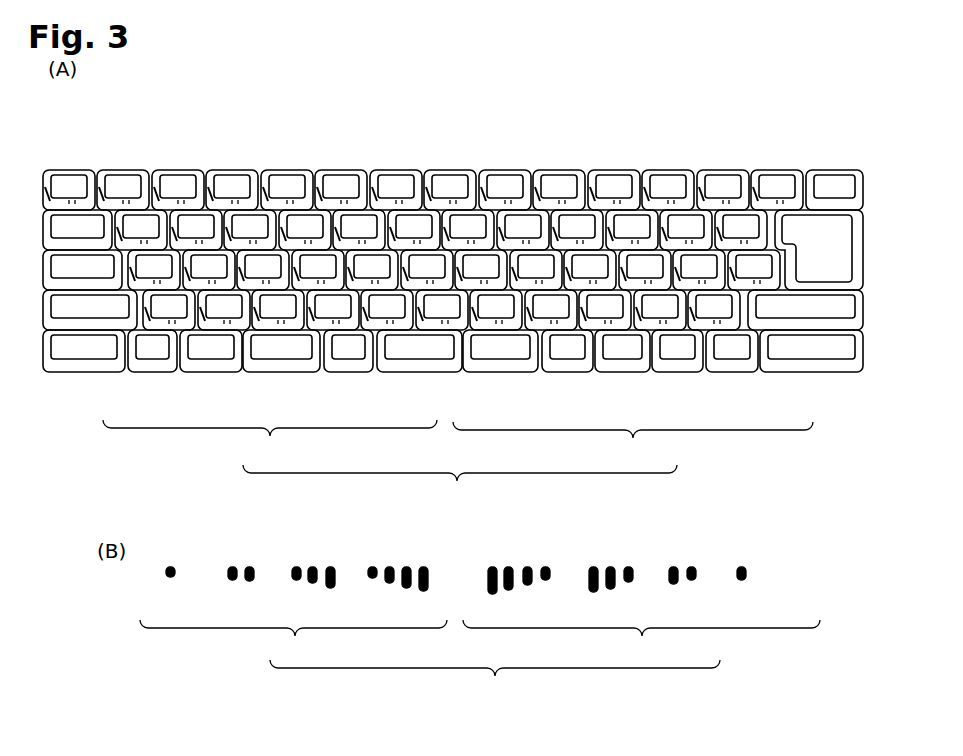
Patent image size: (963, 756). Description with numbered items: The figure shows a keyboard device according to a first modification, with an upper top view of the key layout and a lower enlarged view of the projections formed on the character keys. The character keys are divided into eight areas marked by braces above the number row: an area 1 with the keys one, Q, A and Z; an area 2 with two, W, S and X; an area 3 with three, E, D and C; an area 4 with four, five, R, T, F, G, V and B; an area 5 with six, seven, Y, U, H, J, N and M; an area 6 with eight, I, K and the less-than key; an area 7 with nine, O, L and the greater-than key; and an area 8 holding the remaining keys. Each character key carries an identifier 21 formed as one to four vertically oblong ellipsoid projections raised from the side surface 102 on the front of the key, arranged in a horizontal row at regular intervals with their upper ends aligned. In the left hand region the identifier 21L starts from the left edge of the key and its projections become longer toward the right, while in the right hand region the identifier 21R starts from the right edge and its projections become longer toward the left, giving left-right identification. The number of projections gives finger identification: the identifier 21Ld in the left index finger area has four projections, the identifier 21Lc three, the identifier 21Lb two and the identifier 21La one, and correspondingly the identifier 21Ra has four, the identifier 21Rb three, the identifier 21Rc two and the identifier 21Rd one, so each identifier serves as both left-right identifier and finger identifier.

The area 1 is at (138, 162).
The area 2 is at (143, 162).
The area 3 is at (197, 162).
The area 4 is at (363, 163).
The area 5 is at (470, 162).
The area 6 is at (525, 162).
The area 7 is at (582, 162).
The area 8 is at (772, 246).
The side surface 102 is at (453, 375).
The identifier 21 is at (481, 587).
The identifier 21L is at (275, 542).
The identifier 21R is at (636, 546).
The identifier 21La is at (158, 324).
The identifier 21Lb is at (221, 323).
The identifier 21Lc is at (286, 324).
The identifier 21Ld is at (338, 333).
The identifier 21Ra is at (437, 333).
The identifier 21Rb is at (556, 333).
The identifier 21Rc is at (628, 343).
The identifier 21Rd is at (674, 324).